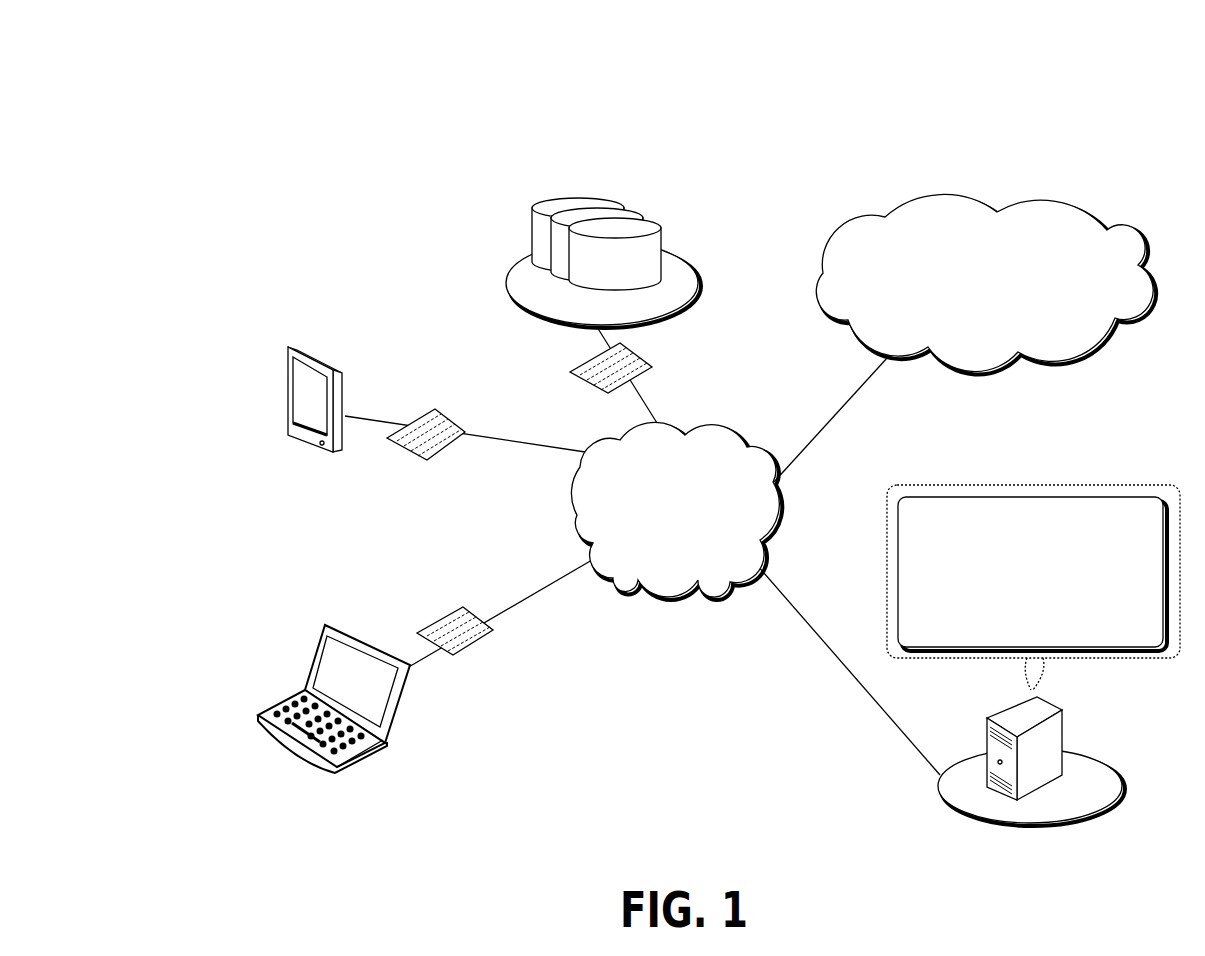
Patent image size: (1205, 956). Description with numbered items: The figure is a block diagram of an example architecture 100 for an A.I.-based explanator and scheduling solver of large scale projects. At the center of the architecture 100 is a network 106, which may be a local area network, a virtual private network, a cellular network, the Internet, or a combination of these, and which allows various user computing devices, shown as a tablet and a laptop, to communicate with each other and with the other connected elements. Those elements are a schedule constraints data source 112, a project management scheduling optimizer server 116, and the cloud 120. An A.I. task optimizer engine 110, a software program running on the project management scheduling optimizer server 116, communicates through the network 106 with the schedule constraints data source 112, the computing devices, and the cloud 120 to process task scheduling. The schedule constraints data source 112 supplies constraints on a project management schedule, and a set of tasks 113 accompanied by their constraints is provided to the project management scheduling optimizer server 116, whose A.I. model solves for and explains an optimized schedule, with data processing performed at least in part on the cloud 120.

The architecture 100 is at (110, 46).
The network 106 is at (580, 492).
The A.I. task optimizer engine 110 is at (1013, 611).
The schedule constraints data source 112 is at (680, 256).
The set of tasks 113 is at (650, 359).
The project management scheduling optimizer server 116 is at (1107, 767).
The cloud 120 is at (1105, 352).